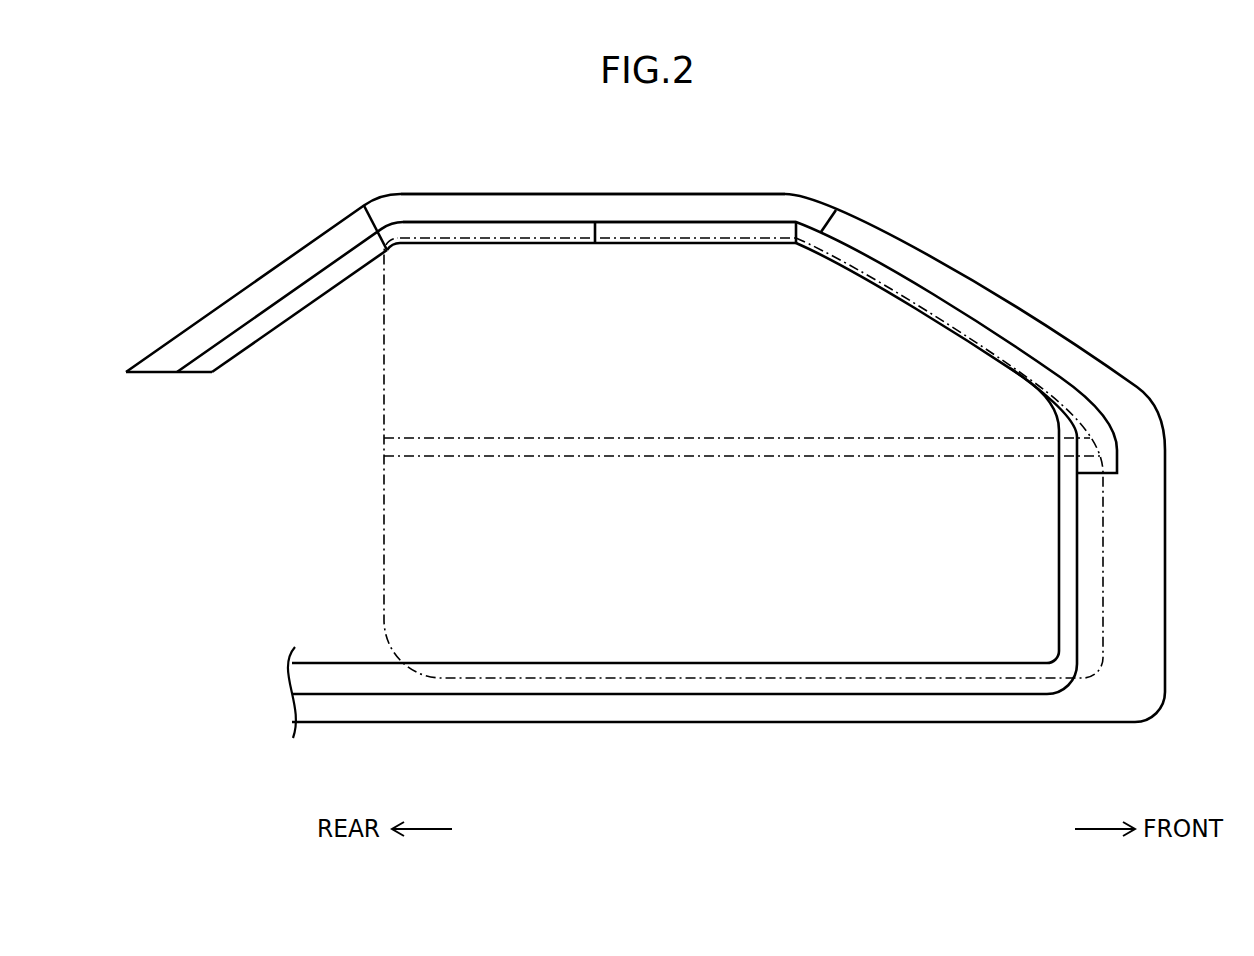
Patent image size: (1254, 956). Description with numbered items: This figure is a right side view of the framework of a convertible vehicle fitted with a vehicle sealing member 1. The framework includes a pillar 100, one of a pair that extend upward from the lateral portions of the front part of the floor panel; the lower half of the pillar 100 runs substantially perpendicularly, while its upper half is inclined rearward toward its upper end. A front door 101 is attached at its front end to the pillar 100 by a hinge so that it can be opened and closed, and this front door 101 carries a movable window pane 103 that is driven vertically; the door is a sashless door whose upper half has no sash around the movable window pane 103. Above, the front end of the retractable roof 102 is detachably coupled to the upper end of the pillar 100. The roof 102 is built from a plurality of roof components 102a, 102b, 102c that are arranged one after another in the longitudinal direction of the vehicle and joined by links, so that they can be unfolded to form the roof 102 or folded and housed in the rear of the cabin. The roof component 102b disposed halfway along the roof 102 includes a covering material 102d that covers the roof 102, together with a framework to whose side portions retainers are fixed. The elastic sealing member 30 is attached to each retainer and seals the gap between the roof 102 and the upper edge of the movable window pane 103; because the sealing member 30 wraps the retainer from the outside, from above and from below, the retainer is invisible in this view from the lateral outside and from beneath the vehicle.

The vehicle sealing member 1 is at (659, 250).
The sealing member 30 is at (555, 232).
The pillar 100 is at (1058, 350).
The front door 101 is at (384, 508).
The roof 102 is at (481, 236).
The roof component 102a is at (649, 184).
The roof component 102b is at (448, 220).
The roof component 102c is at (300, 285).
The covering material 102d is at (558, 194).
The movable window pane 103 is at (384, 370).